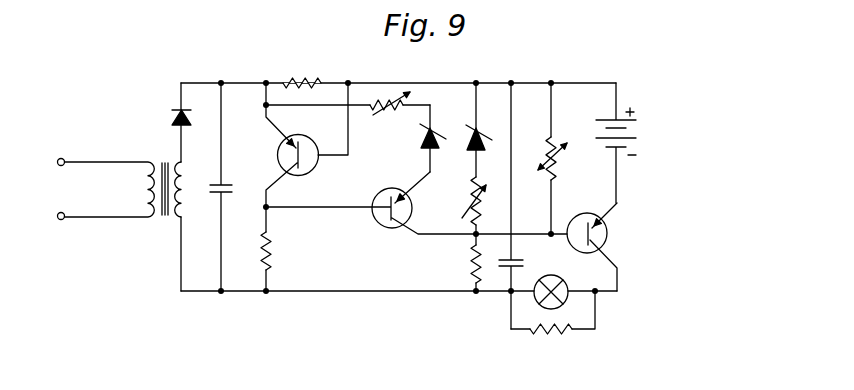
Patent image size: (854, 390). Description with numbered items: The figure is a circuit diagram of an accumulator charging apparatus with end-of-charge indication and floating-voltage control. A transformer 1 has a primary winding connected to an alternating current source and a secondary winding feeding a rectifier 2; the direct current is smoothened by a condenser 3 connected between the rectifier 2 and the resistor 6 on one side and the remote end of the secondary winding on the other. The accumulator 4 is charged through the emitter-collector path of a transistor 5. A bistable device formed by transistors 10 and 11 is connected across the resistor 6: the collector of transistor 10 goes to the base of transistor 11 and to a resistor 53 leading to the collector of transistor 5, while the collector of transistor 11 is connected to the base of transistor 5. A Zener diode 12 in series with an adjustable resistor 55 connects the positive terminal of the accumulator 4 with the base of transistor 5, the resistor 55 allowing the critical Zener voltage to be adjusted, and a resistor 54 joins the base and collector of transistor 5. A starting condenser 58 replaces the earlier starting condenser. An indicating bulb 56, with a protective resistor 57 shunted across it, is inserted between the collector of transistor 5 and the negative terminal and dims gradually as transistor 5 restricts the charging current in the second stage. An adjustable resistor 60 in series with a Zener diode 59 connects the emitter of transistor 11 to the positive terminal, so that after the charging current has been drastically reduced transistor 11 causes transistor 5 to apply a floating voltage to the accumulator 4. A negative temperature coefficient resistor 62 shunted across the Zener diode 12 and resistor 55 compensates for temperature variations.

The transformer 1 is at (112, 218).
The rectifier 2 is at (168, 113).
The condenser 3 is at (213, 195).
The accumulator 4 is at (637, 132).
The transistor 5 is at (612, 229).
The resistor 6 is at (298, 73).
The transistor 10 is at (272, 148).
The transistor 11 is at (375, 223).
The Zener diode 12 is at (478, 128).
The resistor 53 is at (275, 250).
The resistor 54 is at (467, 262).
The adjustable resistor 55 is at (470, 198).
The indicating bulb 56 is at (567, 287).
The protective resistor 57 is at (555, 337).
The starting condenser 58 is at (522, 263).
The Zener diode 59 is at (432, 132).
The adjustable resistor 60 is at (387, 113).
The resistor 62 is at (567, 168).